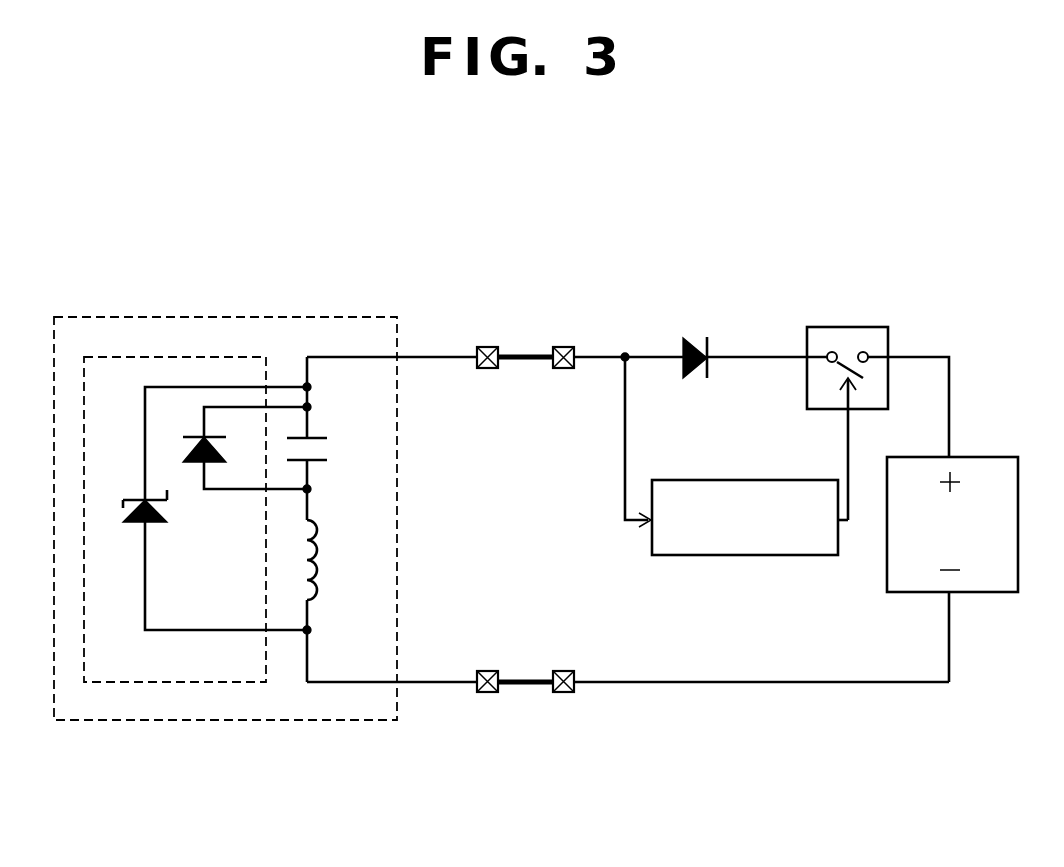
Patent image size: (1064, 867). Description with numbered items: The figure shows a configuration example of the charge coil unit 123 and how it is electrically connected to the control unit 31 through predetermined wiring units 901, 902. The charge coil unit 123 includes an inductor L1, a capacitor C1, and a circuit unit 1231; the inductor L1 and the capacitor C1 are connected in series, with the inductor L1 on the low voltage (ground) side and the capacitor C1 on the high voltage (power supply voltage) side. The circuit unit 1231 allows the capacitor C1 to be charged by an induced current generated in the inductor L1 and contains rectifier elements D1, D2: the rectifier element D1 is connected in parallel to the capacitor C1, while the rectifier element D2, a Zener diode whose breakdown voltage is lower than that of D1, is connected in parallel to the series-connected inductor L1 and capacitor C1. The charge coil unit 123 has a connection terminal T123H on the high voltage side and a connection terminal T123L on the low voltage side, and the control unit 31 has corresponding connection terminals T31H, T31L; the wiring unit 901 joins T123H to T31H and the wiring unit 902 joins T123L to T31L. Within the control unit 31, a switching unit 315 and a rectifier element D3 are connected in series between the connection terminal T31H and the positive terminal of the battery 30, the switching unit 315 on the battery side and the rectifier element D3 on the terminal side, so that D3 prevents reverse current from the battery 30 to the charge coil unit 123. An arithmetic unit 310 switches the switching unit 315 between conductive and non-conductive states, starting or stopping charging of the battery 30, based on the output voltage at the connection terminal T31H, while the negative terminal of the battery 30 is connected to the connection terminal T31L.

The control unit 31 is at (808, 230).
The charge coil unit 123 is at (337, 315).
The circuit unit 1231 is at (118, 682).
The switching unit 315 is at (877, 327).
The battery 30 is at (978, 457).
The arithmetic unit 310 is at (710, 555).
The wiring unit 901 is at (519, 368).
The wiring unit 902 is at (522, 671).
The connection terminal T123H is at (487, 347).
The connection terminal T31H is at (564, 347).
The connection terminal T123L is at (485, 692).
The connection terminal T31L is at (563, 692).
The rectifier element D1 is at (236, 448).
The rectifier element D2 is at (204, 508).
The rectifier element D3 is at (696, 337).
The capacitor C1 is at (325, 452).
The inductor L1 is at (336, 560).